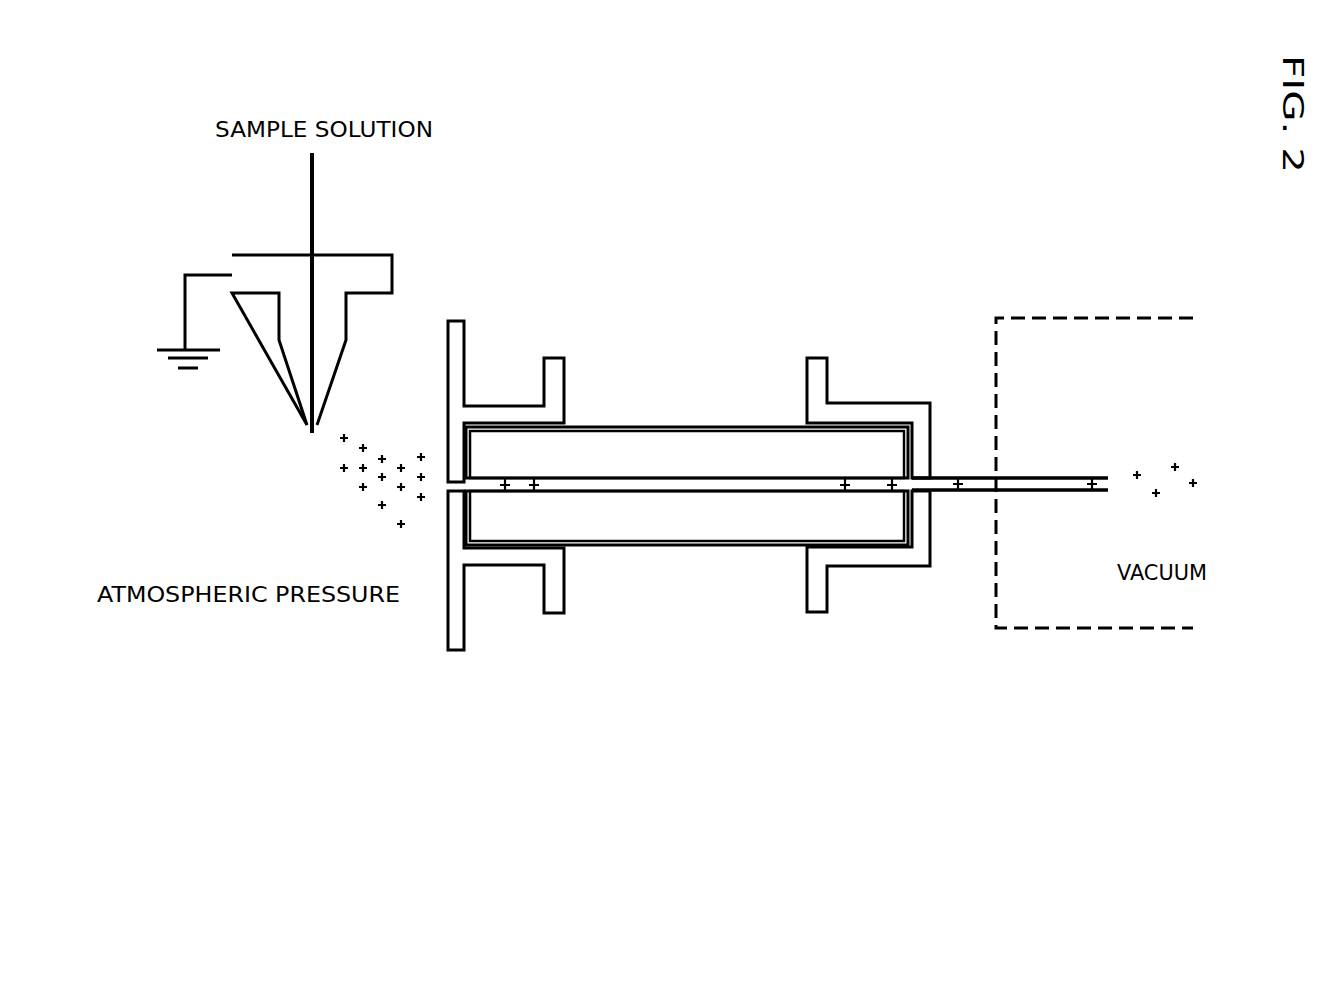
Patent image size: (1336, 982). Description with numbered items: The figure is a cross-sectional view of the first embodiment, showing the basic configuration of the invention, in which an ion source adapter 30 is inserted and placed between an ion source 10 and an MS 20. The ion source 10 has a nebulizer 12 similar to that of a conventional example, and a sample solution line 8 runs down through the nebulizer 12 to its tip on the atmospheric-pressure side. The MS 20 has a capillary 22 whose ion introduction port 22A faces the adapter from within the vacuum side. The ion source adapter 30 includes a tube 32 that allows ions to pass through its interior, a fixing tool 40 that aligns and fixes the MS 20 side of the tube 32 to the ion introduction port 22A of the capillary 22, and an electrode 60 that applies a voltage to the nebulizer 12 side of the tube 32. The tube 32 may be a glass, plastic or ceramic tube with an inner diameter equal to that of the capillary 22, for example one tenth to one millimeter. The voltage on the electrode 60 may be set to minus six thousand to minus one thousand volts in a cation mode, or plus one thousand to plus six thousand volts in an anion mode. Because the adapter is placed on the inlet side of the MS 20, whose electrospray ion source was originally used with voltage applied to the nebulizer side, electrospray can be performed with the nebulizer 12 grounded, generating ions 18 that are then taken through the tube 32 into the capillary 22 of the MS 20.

The ion source 10 is at (190, 196).
The sample solution needle / capillary 8 is at (313, 205).
The nebulizer 12 is at (300, 397).
The ions 18 is at (320, 503).
The electrode 60 is at (506, 586).
The ion source adapter 30 is at (673, 602).
The tube 32 is at (675, 412).
The fixing tool 40 is at (845, 567).
The capillary 22 is at (1050, 513).
The ion introduction port 22A is at (943, 493).
The MS 20 is at (992, 335).